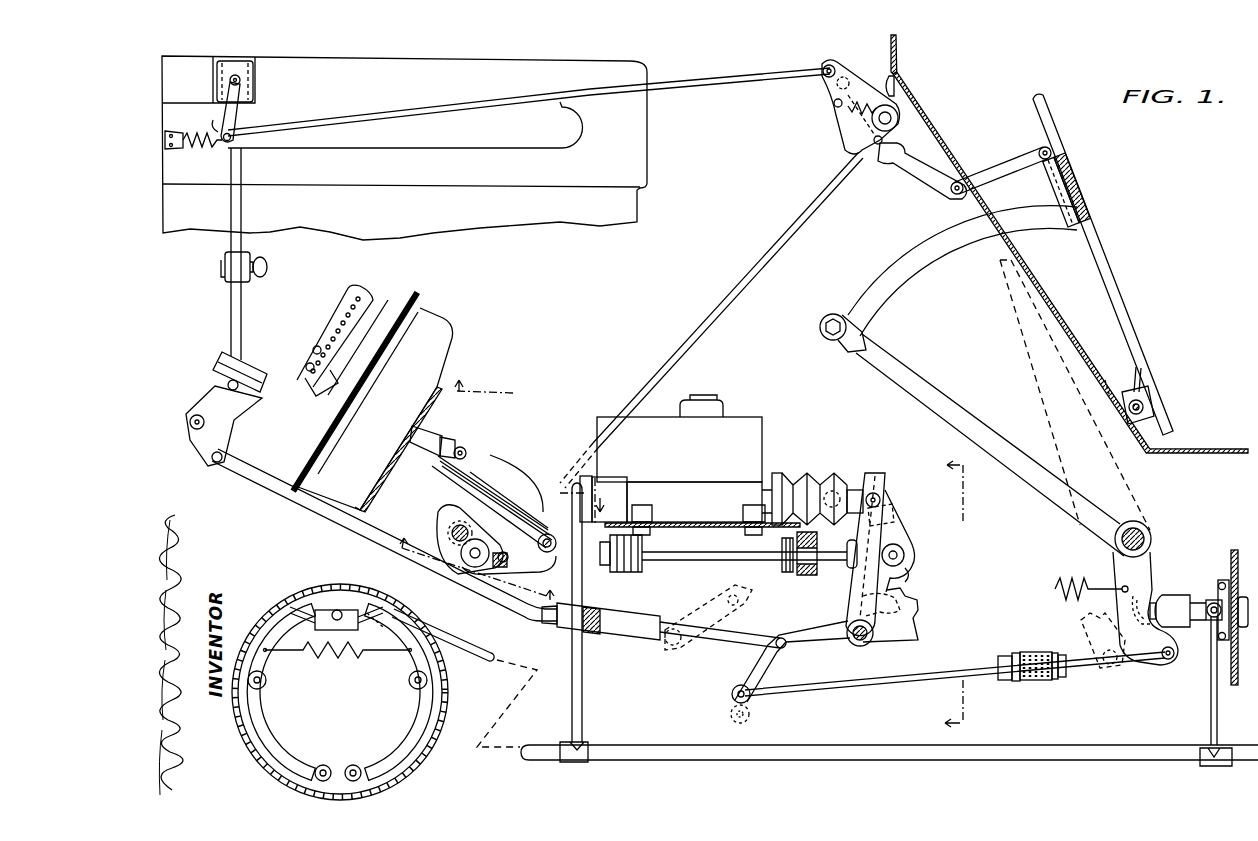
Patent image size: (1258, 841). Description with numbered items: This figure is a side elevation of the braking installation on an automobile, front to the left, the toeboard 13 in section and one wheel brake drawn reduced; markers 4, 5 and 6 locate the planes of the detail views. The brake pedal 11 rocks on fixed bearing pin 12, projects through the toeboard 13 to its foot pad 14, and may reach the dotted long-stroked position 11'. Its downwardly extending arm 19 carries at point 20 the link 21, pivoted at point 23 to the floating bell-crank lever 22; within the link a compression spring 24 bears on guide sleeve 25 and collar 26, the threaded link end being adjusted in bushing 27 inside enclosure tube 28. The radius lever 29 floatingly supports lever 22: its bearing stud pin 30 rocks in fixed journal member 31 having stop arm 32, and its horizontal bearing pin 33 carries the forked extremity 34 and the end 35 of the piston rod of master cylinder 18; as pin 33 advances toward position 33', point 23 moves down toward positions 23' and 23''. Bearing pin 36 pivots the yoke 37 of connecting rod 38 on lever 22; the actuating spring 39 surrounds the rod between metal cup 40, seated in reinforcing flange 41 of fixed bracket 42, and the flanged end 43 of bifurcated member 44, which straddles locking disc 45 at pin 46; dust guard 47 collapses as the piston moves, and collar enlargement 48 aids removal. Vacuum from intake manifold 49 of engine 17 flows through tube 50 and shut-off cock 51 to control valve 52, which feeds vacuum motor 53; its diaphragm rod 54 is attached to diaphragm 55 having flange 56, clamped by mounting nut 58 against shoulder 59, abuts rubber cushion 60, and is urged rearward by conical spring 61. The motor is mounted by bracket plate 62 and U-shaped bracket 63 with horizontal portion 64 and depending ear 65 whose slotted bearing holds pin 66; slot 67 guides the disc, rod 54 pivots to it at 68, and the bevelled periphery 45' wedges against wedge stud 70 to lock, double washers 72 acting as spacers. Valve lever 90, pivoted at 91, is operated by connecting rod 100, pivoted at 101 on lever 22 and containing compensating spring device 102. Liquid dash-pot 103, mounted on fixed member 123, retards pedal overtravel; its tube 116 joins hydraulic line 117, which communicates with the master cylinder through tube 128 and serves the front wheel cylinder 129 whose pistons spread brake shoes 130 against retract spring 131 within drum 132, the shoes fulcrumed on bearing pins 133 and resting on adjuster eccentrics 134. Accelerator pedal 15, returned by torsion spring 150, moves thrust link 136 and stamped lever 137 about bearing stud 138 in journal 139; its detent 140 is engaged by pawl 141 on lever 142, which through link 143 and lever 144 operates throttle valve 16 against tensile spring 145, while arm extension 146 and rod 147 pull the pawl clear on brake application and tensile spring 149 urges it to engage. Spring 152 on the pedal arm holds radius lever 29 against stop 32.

The section line 4- 4 is at (961, 594).
The section line 5- 5 is at (532, 443).
The section line 6- 6 is at (474, 567).
The brake pedal 11 is at (972, 381).
The long-stroked position of brake pedal 11' is at (1073, 395).
The fixed bearing pin 12 is at (1148, 548).
The toeboard 13 is at (1066, 327).
The foot pad 14 is at (1090, 212).
The accelerator pedal 15 is at (1055, 130).
The throttle valve 16 is at (252, 52).
The engine 17 is at (448, 60).
The master cylinder 18 is at (742, 425).
The downwardly extending arm 19 is at (1150, 558).
The pivot point 20 is at (1166, 661).
The link 21 is at (905, 686).
The floating lever 22 is at (908, 536).
The pivot point 23 is at (767, 662).
The clevis alternate position 23' is at (708, 631).
The displaced position of pivot point 23'' is at (717, 720).
The compression spring 24 is at (1038, 650).
The annular guide sleeve 25 is at (1064, 680).
The collar 26 is at (1016, 683).
The bushing 27 is at (1006, 655).
The enclosure tube 28 is at (1048, 682).
The radius lever 29 is at (882, 474).
The bearing stud pin 30 is at (852, 646).
The fixed journal member 31 is at (918, 648).
The stop arm 32 is at (905, 600).
The horizontal bearing pin 33 is at (890, 484).
The forward position of bearing pin 33' is at (826, 473).
The forked extremity 34 is at (893, 507).
The master cylinder piston rod end 35 is at (875, 492).
The bearing pin 36 is at (905, 552).
The yoke 37 is at (908, 572).
The connecting rod 38 is at (698, 562).
The actuating spring 39 is at (642, 574).
The formed metal cup 40 is at (810, 576).
The reinforcing flange 41 is at (750, 534).
The fixed bracket 42 is at (680, 530).
The flanged end 43 is at (626, 574).
The bifurcated member 44 is at (510, 568).
The locking disc 45 is at (494, 479).
The outer periphery of disc 45' is at (492, 486).
The pin 46 is at (462, 558).
The rubber dust guard 47 is at (803, 478).
The collar enlargement 48 is at (847, 552).
The intake manifold 49 is at (400, 144).
The tube 50 is at (243, 160).
The shut-off cock 51 is at (224, 258).
The control valve 52 is at (212, 380).
The vacuum motor 53 is at (447, 324).
The diaphragm rod 54 is at (434, 430).
The rubber diaphragm 55 is at (372, 296).
The flange 56 is at (420, 292).
The mounting nut 58 is at (308, 345).
The shoulder 59 is at (320, 396).
The rubber disc cushion 60 is at (306, 366).
The conical compression spring 61 is at (340, 305).
The bracket plate 62 is at (352, 509).
The bracket 63 is at (520, 480).
The horizontal portion 64 is at (515, 500).
The ear 65 is at (440, 524).
The pin 66 is at (450, 537).
The elongated slot 67 is at (548, 534).
The pivot 68 is at (461, 447).
The wedge stud 70 is at (592, 525).
The double washers 72 is at (480, 576).
The valve lever 90 is at (210, 458).
The pivot 91 is at (190, 425).
The connecting rod 100 is at (338, 538).
The pivot 101 is at (781, 636).
The movement compensating spring device 102 is at (628, 640).
The liquid dash-pot 103 is at (1204, 585).
The tube 116 is at (1210, 725).
The hydraulic brake line 117 is at (878, 748).
The fixed member 123 is at (1230, 552).
The tube 128 is at (586, 702).
The double hydraulic cylinder 129 is at (318, 608).
The brake shoes 130 is at (262, 724).
The shoe retract spring 131 is at (362, 655).
The drum 132 is at (397, 608).
The fixed bearing pins 133 is at (332, 750).
The clearance adjuster eccentrics 134 is at (262, 689).
The connecting thrust link 136 is at (1012, 158).
The flat stamped lever 137 is at (890, 160).
The bearing stud 138 is at (900, 119).
The fixed bearing journal 139 is at (898, 78).
The detent 140 is at (846, 116).
The pawl 141 is at (834, 102).
The lever 142 is at (855, 68).
The link 143 is at (740, 84).
The throttle valve lever 144 is at (253, 100).
The tensile spring 145 is at (197, 136).
The lateral arm extension 146 is at (858, 142).
The connecting rod 147 is at (752, 275).
The tensile spring 149 is at (902, 103).
The torsion spring 150 is at (1118, 375).
The spring 152 is at (1086, 580).